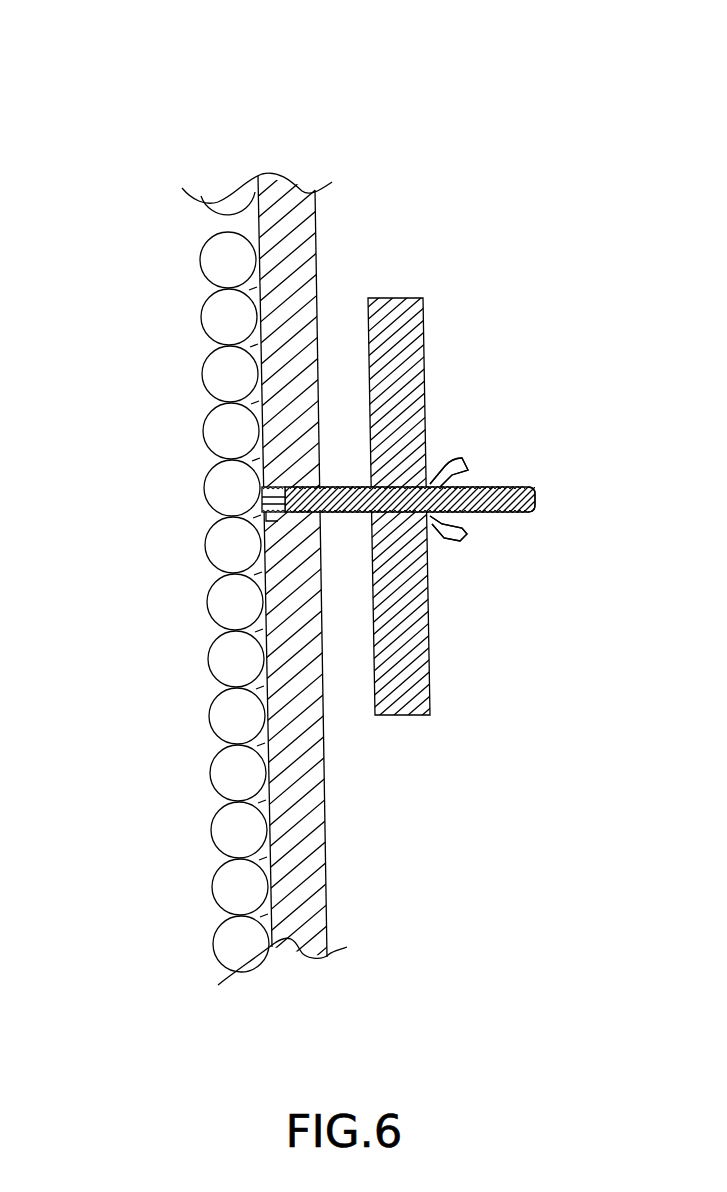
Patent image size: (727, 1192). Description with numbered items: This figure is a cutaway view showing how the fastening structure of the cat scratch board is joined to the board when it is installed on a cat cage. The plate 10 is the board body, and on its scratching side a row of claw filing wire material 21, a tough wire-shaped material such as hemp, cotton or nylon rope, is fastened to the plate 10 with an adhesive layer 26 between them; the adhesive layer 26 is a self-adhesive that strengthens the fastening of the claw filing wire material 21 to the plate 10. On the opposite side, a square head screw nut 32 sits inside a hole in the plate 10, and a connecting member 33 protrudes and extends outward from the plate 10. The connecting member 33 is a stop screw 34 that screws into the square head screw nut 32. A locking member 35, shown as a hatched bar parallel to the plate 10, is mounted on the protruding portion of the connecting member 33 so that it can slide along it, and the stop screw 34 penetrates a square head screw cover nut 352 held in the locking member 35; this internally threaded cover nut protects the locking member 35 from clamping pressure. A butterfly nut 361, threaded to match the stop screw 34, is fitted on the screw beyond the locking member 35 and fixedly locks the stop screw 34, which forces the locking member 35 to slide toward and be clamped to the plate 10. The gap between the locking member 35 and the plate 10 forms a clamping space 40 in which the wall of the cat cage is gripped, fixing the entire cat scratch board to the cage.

The plate 10 is at (296, 141).
The adhesive layer 26 is at (257, 188).
The claw filing wire material 21 is at (226, 367).
The square head screw nut 32 is at (260, 490).
The clamping space 40 is at (349, 283).
The locking member 35 is at (476, 293).
The square head screw cover nut 352 is at (432, 478).
The butterfly nut 361 is at (456, 537).
The connecting member 33 is at (556, 468).
The stop screw 34 is at (534, 501).